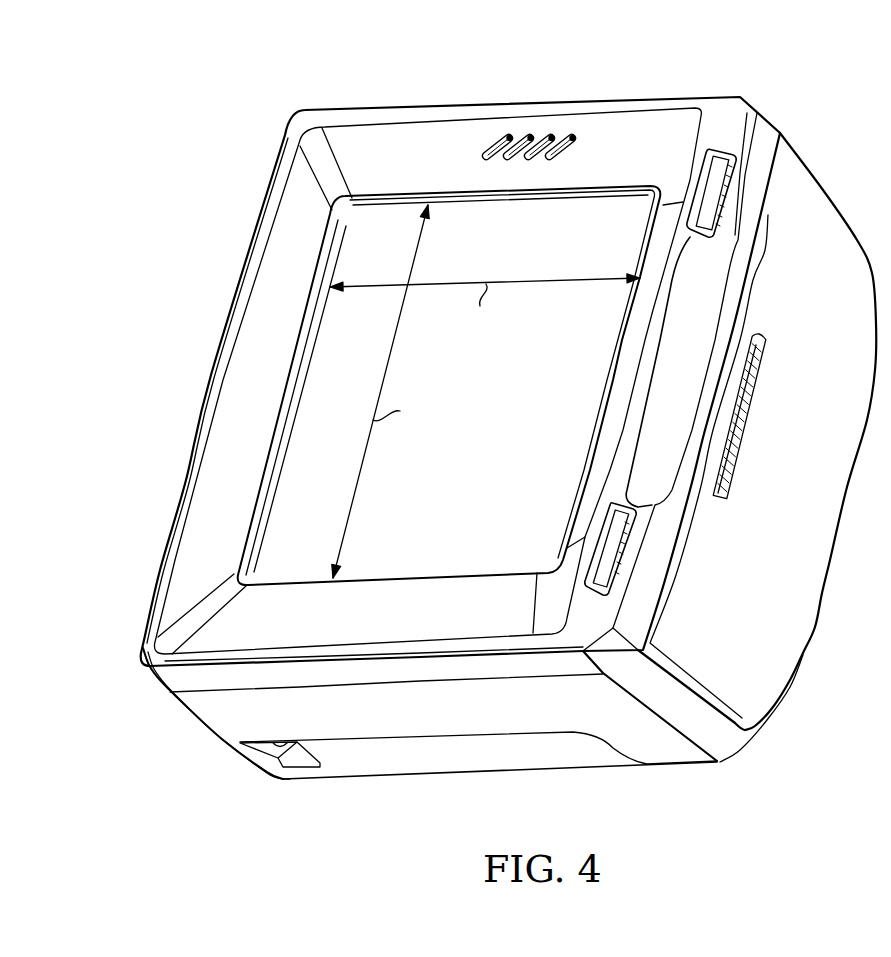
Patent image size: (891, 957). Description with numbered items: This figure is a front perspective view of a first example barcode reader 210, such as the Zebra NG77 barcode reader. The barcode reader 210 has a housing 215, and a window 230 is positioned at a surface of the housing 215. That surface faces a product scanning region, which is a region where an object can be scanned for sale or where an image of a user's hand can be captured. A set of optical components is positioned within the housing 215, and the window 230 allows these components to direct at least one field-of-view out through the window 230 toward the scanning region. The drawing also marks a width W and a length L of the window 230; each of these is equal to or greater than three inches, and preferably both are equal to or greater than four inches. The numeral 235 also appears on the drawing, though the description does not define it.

The barcode reader 210 is at (220, 82).
The housing 215 is at (750, 740).
The window 230 is at (517, 263).
The top surface of housing 235 is at (613, 147).